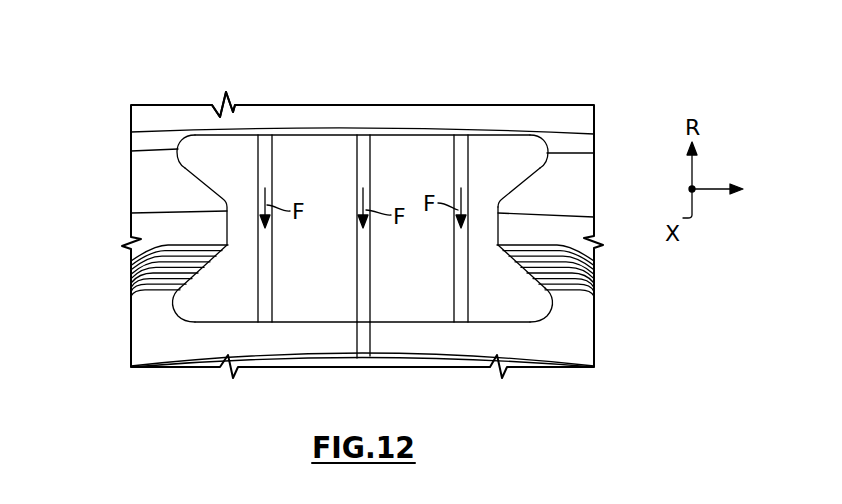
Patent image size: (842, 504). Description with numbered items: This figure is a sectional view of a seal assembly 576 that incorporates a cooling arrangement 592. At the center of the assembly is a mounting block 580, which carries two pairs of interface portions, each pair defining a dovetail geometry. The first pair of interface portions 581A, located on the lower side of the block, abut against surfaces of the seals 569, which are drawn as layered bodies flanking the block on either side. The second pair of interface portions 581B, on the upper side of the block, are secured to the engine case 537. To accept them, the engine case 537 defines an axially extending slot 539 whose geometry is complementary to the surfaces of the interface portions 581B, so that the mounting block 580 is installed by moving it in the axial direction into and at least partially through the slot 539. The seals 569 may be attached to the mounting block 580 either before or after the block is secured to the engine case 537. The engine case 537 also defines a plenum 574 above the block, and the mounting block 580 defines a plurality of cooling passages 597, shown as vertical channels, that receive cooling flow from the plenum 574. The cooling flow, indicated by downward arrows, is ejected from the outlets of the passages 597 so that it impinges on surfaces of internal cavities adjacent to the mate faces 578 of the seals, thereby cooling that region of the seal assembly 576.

The seal assembly 576 is at (150, 105).
The cooling arrangement 592 is at (218, 105).
The engine case 537 is at (460, 118).
The mounting block 580 is at (483, 133).
The second pair of interface portions 581B is at (515, 155).
The plenum 574 is at (168, 146).
The axially extending slot 539 is at (514, 183).
The first pair of interface portions 581A is at (197, 300).
The seals 569 is at (131, 278).
The cooling passages 597 is at (270, 285).
The mate faces 578 is at (358, 352).